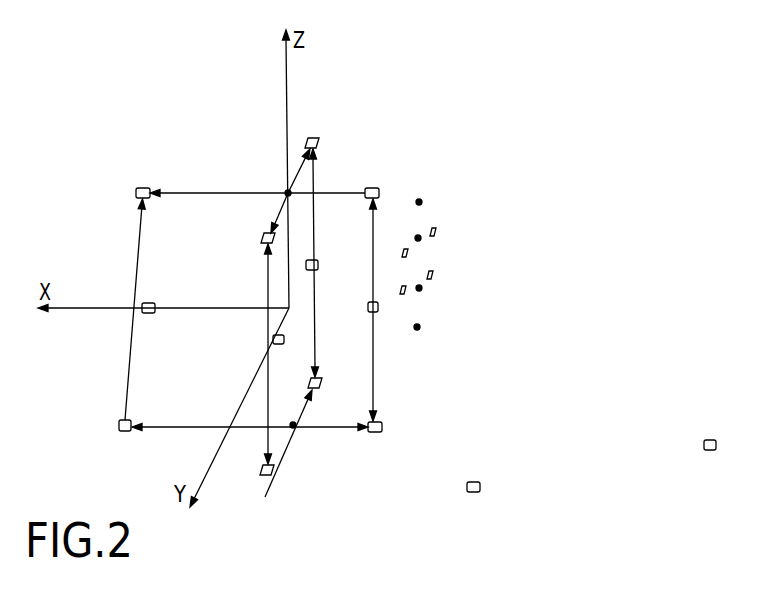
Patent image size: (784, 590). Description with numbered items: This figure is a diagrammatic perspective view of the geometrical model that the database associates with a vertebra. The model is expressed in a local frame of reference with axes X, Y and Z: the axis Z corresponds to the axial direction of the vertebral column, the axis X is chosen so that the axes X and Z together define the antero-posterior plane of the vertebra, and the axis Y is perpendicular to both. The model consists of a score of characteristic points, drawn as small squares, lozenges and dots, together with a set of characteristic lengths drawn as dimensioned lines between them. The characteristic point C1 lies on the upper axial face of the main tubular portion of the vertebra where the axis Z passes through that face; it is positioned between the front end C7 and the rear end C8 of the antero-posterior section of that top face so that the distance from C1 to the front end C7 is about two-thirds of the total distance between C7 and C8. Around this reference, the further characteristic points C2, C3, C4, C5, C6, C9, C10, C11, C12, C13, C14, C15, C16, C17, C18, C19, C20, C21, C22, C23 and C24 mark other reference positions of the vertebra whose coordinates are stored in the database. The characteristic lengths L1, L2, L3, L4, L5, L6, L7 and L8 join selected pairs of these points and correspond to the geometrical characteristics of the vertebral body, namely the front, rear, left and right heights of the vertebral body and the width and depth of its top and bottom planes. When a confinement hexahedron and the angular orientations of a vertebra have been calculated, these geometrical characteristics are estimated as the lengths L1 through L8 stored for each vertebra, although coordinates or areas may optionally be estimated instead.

The characteristic point C1 is at (285, 190).
The characteristic point C2 is at (294, 427).
The characteristic point C3 is at (419, 200).
The characteristic point C4 is at (421, 289).
The characteristic point C5 is at (416, 237).
The characteristic point C6 is at (419, 329).
The front end of the axial face C7 is at (141, 188).
The rear end of the axial face C8 is at (371, 187).
The characteristic point C9 is at (118, 429).
The characteristic point C10 is at (382, 431).
The characteristic point C11 is at (152, 302).
The characteristic point C12 is at (370, 311).
The characteristic point C13 is at (706, 441).
The characteristic point C14 is at (262, 238).
The characteristic point C15 is at (318, 138).
The characteristic point C16 is at (268, 493).
The characteristic point C17 is at (317, 388).
The characteristic point C18 is at (272, 341).
The characteristic point C19 is at (318, 266).
The characteristic point C20 is at (402, 296).
The characteristic point C21 is at (433, 275).
The characteristic point C22 is at (408, 253).
The characteristic point C23 is at (436, 228).
The reference point C24 is at (480, 487).
The characteristic length L1 is at (128, 360).
The characteristic length L2 is at (210, 193).
The characteristic length L3 is at (280, 211).
The characteristic length L4 is at (372, 237).
The characteristic length L5 is at (180, 427).
The characteristic length L6 is at (301, 409).
The characteristic length L7 is at (266, 278).
The characteristic length L8 is at (316, 174).